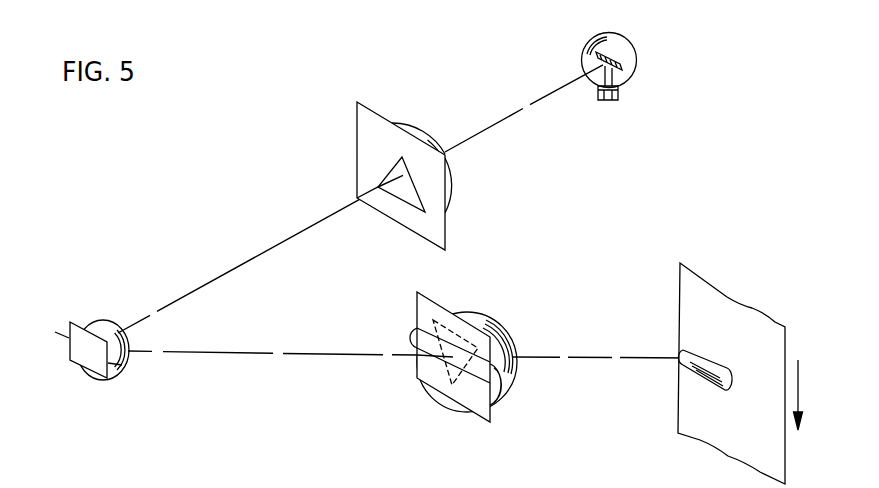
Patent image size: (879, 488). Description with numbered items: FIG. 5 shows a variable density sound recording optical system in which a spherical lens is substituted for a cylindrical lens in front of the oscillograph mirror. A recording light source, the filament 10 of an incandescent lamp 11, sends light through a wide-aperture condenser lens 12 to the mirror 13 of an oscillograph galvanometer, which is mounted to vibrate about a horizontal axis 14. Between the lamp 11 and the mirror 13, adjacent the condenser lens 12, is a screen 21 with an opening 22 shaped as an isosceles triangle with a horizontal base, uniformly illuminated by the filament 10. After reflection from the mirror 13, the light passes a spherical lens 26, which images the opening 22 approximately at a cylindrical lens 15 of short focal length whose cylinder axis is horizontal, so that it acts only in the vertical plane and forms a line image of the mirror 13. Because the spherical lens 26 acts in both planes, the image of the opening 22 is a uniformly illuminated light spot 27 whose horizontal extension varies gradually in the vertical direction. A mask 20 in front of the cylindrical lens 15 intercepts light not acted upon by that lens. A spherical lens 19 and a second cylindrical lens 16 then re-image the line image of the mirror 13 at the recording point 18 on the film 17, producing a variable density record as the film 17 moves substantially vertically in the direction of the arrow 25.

The filament 10 is at (622, 67).
The incandescent lamp 11 is at (588, 47).
The condenser lens 12 is at (410, 122).
The mirror 13 is at (85, 373).
The axis 14 is at (55, 333).
The cylindrical lens 15 is at (498, 385).
The second cylindrical lens 16 is at (728, 384).
The film 17 is at (750, 309).
The recording point 18 is at (688, 352).
The spherical lens 19 is at (470, 310).
The mask 20 is at (417, 292).
The screen 21 is at (355, 135).
The opening 22 is at (408, 195).
The arrow 25 is at (801, 386).
The spherical lens 26 is at (107, 320).
The light spot 27 is at (441, 323).